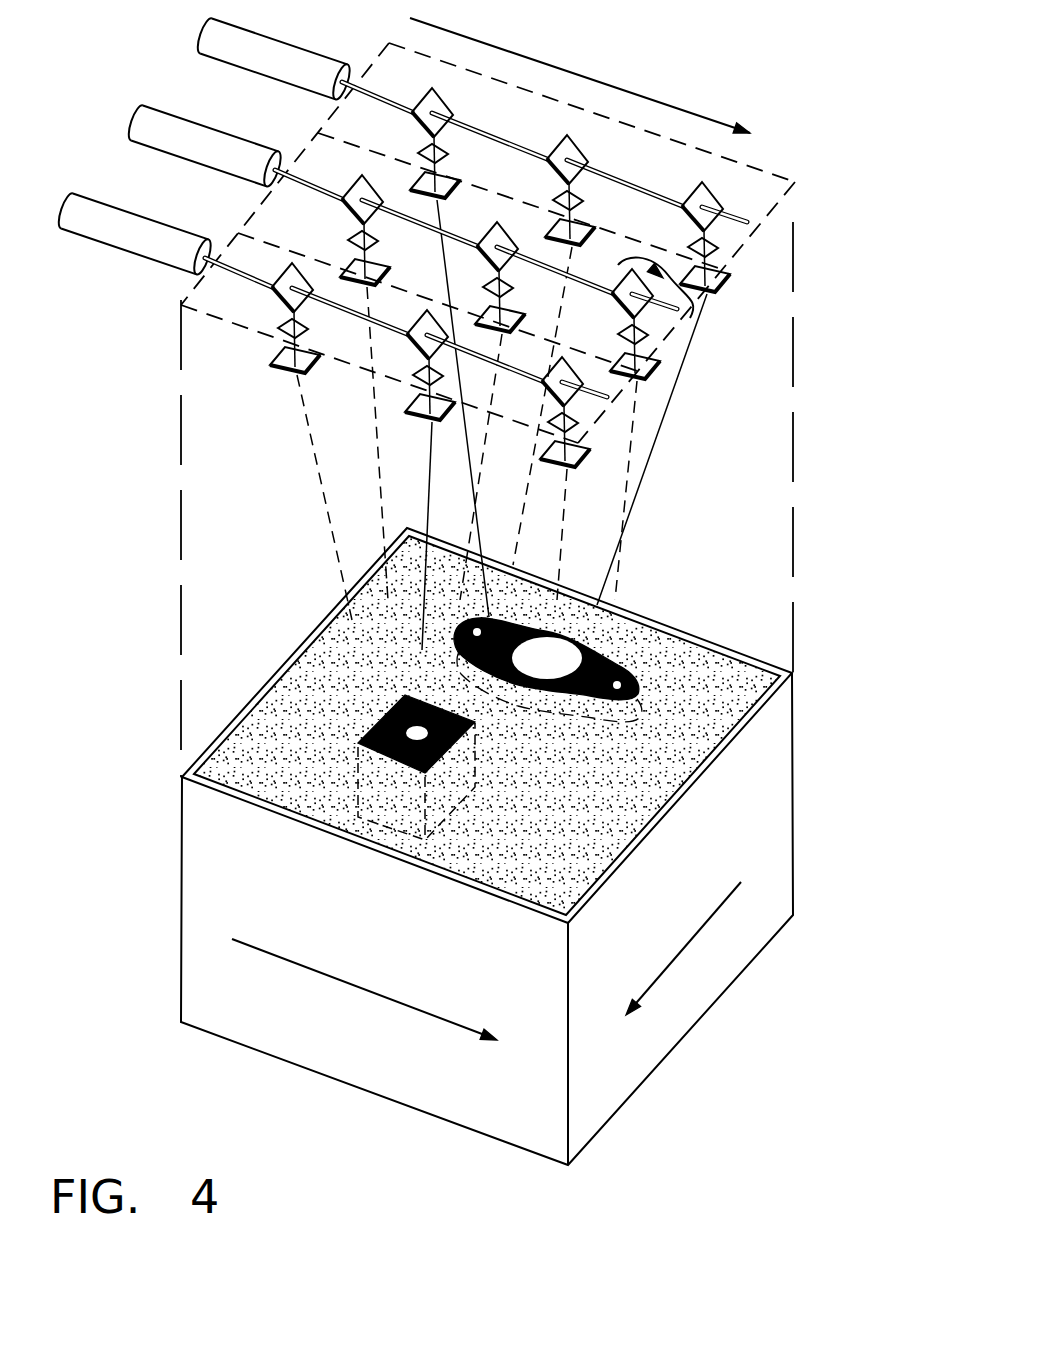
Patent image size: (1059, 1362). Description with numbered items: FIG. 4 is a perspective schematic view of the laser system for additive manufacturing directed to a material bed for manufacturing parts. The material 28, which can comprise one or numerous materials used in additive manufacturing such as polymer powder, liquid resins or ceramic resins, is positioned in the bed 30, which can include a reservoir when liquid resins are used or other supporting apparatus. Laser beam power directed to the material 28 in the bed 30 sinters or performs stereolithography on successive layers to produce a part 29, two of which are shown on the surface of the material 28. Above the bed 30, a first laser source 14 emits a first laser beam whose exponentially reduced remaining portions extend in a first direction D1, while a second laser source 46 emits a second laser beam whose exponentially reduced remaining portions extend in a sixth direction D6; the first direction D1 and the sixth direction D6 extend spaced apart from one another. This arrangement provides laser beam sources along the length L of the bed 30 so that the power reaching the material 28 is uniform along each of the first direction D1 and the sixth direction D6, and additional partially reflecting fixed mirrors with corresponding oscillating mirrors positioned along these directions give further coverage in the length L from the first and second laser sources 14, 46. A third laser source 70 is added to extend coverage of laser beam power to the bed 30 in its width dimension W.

The first laser source 14 is at (228, 42).
The second laser source 46 is at (160, 125).
The third laser source 70 is at (80, 217).
The material 28 is at (717, 678).
The part 29 is at (357, 735).
The bed 30 is at (730, 867).
The first direction D1 is at (565, 70).
The sixth direction D6 is at (722, 287).
The width dimension W is at (672, 962).
The length L is at (370, 994).